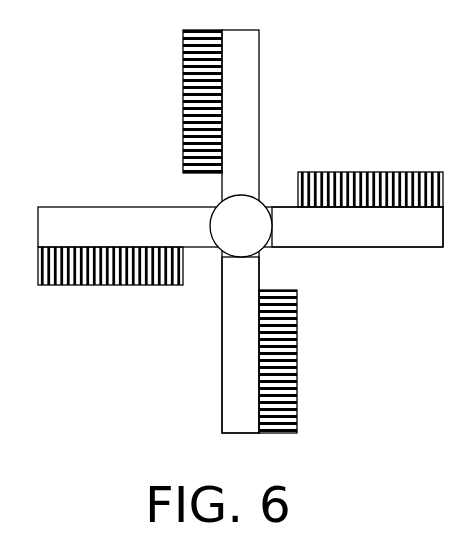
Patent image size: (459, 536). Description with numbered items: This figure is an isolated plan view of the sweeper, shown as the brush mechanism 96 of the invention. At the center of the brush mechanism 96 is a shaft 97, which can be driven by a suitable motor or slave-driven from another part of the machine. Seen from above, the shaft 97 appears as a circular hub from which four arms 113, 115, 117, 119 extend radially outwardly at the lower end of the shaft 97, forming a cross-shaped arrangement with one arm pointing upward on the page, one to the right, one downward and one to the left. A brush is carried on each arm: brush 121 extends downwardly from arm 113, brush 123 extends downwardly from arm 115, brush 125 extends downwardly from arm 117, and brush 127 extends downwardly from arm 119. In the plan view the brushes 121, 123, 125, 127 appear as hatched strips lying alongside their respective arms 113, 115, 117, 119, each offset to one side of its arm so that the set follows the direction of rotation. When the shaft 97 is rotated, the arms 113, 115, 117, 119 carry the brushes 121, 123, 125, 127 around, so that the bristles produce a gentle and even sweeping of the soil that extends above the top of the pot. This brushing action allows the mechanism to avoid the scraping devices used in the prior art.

The brush mechanism 96 is at (336, 113).
The shaft 97 is at (231, 221).
The arm 113 is at (250, 76).
The arm 115 is at (390, 240).
The arm 117 is at (232, 382).
The arm 119 is at (63, 217).
The brush 121 is at (183, 57).
The brush 123 is at (405, 182).
The brush 125 is at (290, 362).
The brush 127 is at (102, 278).